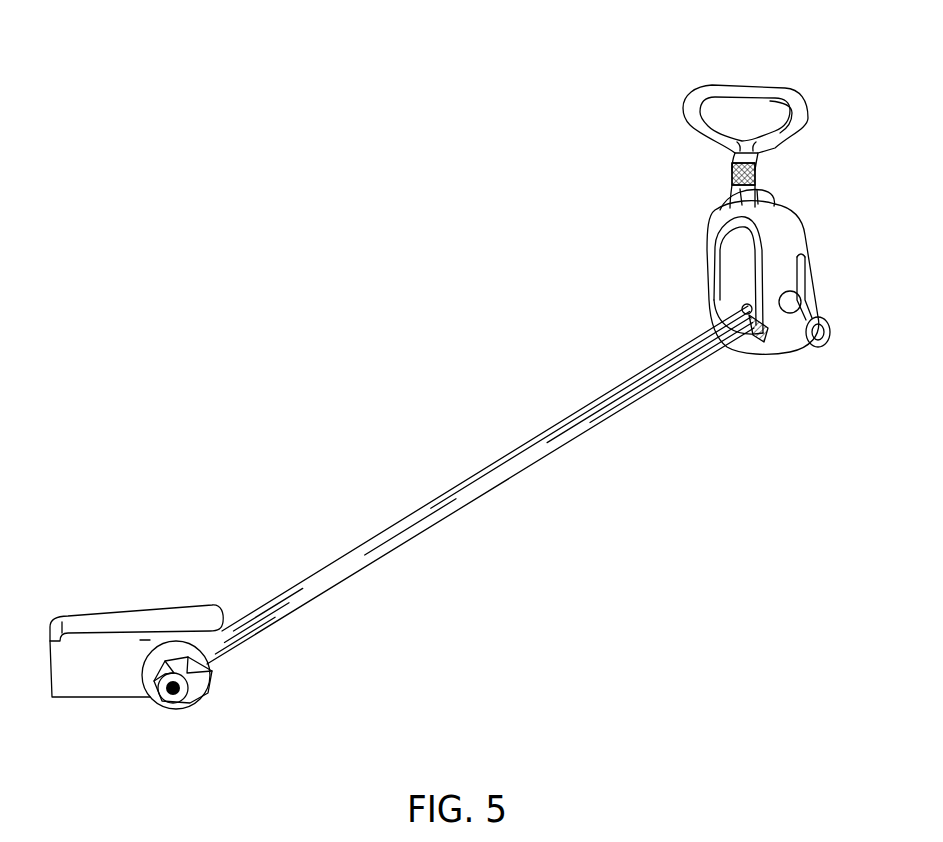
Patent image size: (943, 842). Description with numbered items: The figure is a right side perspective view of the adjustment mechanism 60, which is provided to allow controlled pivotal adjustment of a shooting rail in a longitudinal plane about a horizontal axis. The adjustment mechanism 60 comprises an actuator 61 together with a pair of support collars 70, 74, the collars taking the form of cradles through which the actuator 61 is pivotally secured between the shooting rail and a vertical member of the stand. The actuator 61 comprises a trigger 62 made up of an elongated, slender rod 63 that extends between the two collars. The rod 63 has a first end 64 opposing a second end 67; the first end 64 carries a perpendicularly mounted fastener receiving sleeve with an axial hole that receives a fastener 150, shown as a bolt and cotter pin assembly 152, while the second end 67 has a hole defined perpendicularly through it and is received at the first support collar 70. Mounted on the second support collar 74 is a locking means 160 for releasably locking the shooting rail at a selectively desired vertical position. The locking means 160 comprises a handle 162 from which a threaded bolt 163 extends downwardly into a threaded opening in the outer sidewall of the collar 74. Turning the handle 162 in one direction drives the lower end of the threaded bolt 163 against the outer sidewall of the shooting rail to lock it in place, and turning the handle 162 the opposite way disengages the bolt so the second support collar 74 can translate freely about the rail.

The adjustment mechanism 60 is at (320, 404).
The actuator 61 is at (548, 413).
The trigger 62 is at (617, 421).
The rod 63 is at (617, 421).
The first end 64 is at (741, 307).
The second end 67 is at (221, 675).
The support collar 70 is at (110, 607).
The second support collar 74 is at (708, 244).
The fastener 150 is at (774, 323).
The bolt and cotter pin assembly 152 is at (774, 323).
The locking means 160 is at (668, 126).
The handle 162 is at (746, 86).
The threaded bolt 163 is at (756, 170).